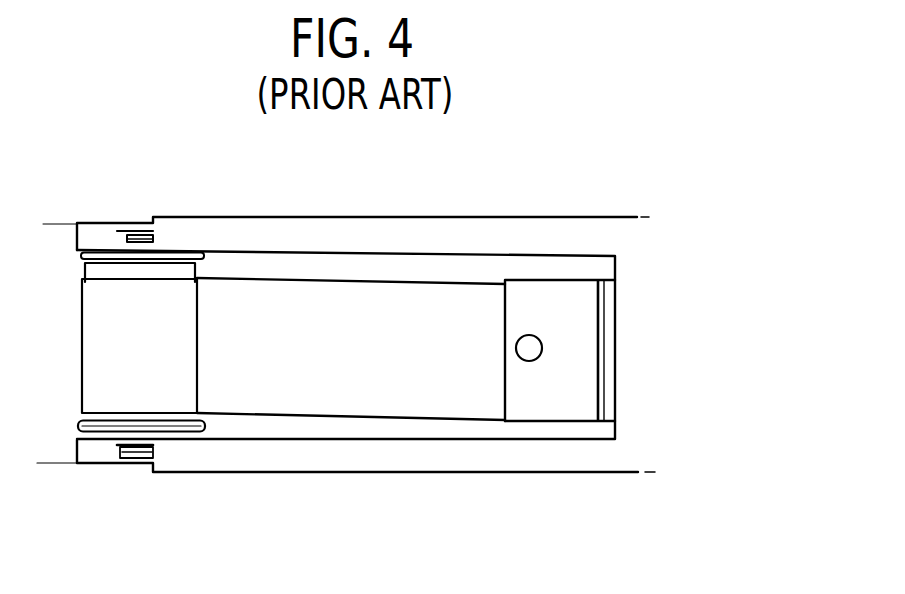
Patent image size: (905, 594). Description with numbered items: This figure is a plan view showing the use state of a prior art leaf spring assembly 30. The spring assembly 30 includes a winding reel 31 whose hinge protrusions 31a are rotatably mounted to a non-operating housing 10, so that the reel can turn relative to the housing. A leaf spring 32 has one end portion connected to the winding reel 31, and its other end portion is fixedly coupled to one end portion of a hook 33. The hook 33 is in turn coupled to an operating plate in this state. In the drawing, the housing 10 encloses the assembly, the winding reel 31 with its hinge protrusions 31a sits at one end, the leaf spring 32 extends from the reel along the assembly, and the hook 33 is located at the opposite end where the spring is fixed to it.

The non-operating housing 10 is at (390, 233).
The spring assembly 30 is at (270, 248).
The winding reel 31 is at (155, 441).
The hinge protrusions 31a is at (128, 226).
The leaf spring 32 is at (356, 380).
The hook 33 is at (533, 300).